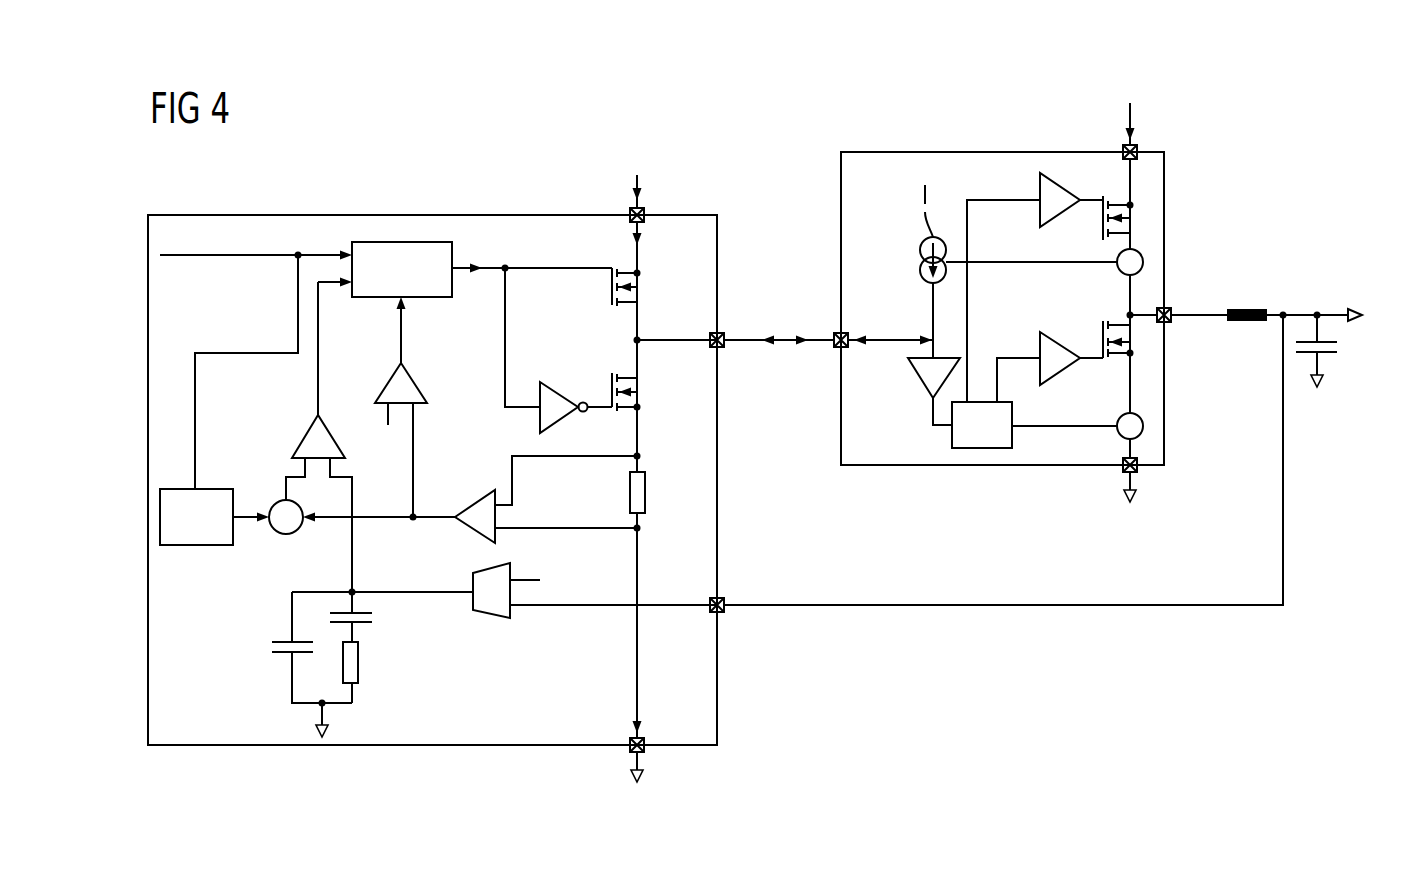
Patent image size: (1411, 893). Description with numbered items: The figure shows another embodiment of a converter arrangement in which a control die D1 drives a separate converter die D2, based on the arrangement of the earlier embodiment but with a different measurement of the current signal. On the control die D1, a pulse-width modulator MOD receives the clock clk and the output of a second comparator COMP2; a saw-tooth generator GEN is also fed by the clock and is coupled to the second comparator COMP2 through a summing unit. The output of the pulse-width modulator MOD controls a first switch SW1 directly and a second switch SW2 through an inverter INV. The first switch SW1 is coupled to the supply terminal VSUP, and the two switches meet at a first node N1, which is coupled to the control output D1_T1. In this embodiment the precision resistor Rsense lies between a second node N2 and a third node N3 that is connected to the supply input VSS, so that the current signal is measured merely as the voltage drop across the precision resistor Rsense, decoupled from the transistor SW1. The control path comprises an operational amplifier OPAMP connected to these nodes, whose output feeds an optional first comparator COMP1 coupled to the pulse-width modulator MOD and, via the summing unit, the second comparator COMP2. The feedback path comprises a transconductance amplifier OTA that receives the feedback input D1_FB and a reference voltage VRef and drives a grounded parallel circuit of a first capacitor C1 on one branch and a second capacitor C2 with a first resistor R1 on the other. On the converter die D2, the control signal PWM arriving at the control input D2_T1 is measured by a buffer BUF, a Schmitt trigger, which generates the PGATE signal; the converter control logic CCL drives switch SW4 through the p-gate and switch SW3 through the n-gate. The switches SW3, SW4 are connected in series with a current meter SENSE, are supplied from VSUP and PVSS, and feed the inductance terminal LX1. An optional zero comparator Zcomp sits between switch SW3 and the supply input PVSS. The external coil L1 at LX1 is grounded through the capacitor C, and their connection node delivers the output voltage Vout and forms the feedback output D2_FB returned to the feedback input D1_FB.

The control die D1 is at (410, 214).
The converter die D2 is at (1002, 151).
The clock clk is at (256, 363).
The pulse-width modulator MOD is at (465, 269).
The first comparator COMP1 is at (447, 363).
The second comparator COMP2 is at (305, 432).
The saw-tooth generator GEN is at (196, 517).
The first switch SW1 is at (611, 392).
The second switch SW2 is at (611, 292).
The inverter INV is at (540, 418).
The operational amplifier OPAMP is at (477, 495).
The precision resistor Rsense is at (630, 492).
The first node N1 is at (640, 343).
The second node N2 is at (640, 459).
The third node N3 is at (640, 531).
The supply terminal VSUP is at (882, 420).
The additional supply terminal VSS is at (662, 757).
The transconductance amplifier OTA is at (483, 618).
The reference voltage VRef is at (554, 578).
The first capacitor C1 is at (272, 648).
The second capacitor C2 is at (373, 618).
The first resistor R1 is at (359, 662).
The buffer BUF is at (920, 381).
The converter control logic CCL is at (1034, 403).
The element p-gate is at (1040, 189).
The element n-gate is at (1062, 376).
The switch SW3 is at (1103, 335).
The switch SW4 is at (1102, 219).
The current meter SENSE is at (1118, 270).
The zero comparator Zcomp is at (1118, 433).
The inductance terminal LX1 is at (1177, 302).
The external coil L1 is at (1247, 323).
The capacitor C is at (1330, 355).
The output voltage Vout is at (1316, 297).
The supply input PVSS is at (1159, 482).